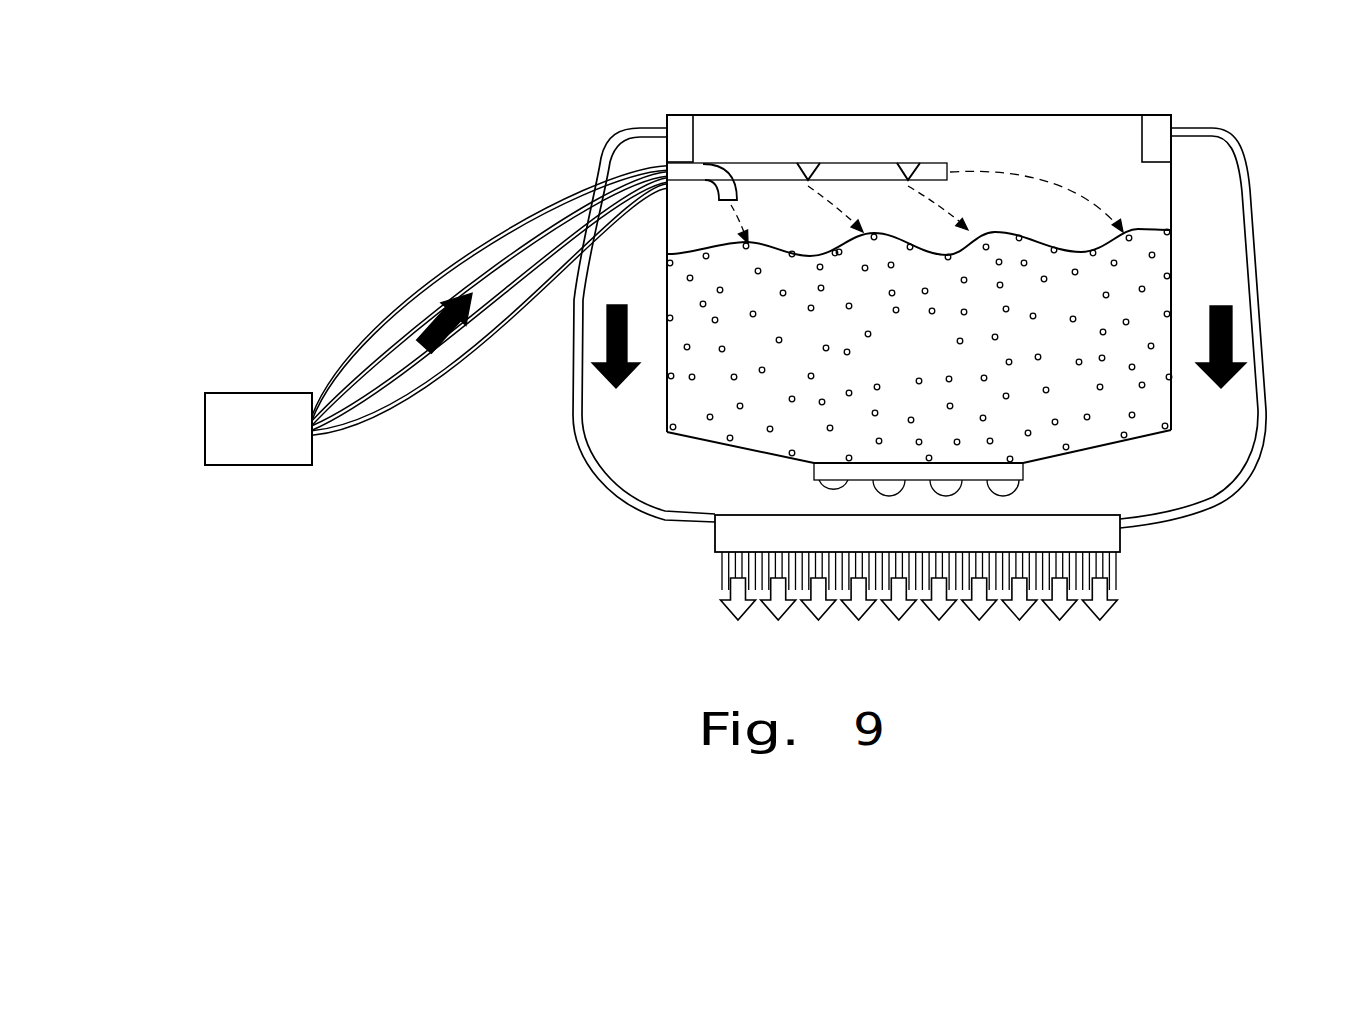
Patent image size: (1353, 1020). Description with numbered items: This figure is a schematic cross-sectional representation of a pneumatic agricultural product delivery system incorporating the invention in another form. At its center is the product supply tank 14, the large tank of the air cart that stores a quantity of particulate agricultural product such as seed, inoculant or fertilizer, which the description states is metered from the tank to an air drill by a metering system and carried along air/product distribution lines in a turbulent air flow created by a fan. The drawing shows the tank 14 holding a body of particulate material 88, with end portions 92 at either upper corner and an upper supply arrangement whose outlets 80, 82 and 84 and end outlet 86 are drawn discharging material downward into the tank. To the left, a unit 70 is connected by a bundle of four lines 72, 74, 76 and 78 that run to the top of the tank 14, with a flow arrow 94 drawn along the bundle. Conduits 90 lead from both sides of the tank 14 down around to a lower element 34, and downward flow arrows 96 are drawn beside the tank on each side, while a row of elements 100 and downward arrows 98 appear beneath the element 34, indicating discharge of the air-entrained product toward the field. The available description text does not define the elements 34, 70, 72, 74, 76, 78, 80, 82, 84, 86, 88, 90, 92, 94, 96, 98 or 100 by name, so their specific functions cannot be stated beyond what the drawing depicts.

The product supply tank 14 is at (1085, 128).
The applicator head 34 is at (1115, 538).
The controller / pump unit 70 is at (207, 427).
The supply tube 72 is at (433, 383).
The supply tube 74 is at (490, 295).
The supply tube 76 is at (400, 333).
The supply tube 78 is at (478, 243).
The first nozzle 80 is at (728, 172).
The second nozzle 82 is at (812, 170).
The third nozzle 84 is at (908, 170).
The manifold outlet 86 is at (950, 168).
The fluid in reservoir 88 is at (925, 363).
The delivery conduit 90 is at (1255, 224).
The end block 92 is at (680, 125).
The flow direction arrow 94 is at (438, 292).
The flow direction arrow 96 is at (1232, 336).
The dispensing flow arrows 98 is at (1113, 590).
The bristles 100 is at (920, 578).